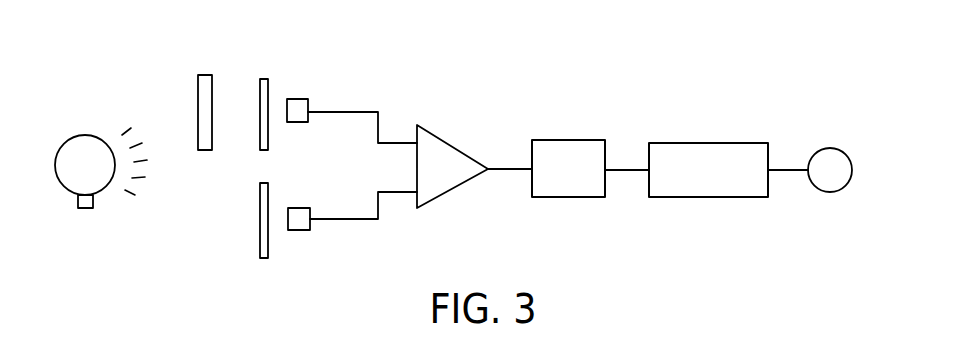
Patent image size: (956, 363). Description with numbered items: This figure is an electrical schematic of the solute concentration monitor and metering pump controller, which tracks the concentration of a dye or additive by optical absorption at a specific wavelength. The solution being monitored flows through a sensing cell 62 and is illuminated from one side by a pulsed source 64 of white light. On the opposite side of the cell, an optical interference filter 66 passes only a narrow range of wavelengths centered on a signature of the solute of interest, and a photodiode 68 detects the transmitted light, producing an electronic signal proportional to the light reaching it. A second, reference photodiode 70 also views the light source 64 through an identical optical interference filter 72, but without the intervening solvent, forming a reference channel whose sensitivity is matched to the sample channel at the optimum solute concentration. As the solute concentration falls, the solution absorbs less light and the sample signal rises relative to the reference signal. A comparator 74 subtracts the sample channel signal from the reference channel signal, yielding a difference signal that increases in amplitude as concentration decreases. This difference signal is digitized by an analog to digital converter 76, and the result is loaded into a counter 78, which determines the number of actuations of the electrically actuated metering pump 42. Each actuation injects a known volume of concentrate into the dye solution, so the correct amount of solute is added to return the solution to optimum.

The metering pump 42 is at (829, 193).
The sensing cell 62 is at (203, 74).
The pulsed source of white light 64 is at (79, 135).
The optical interference filter 66 is at (262, 78).
The photodiode 68 is at (293, 99).
The reference photodiode 70 is at (302, 232).
The optical interference filter 72 is at (263, 266).
The comparator 74 is at (445, 195).
The analog to digital converter 76 is at (568, 197).
The counter 78 is at (692, 197).